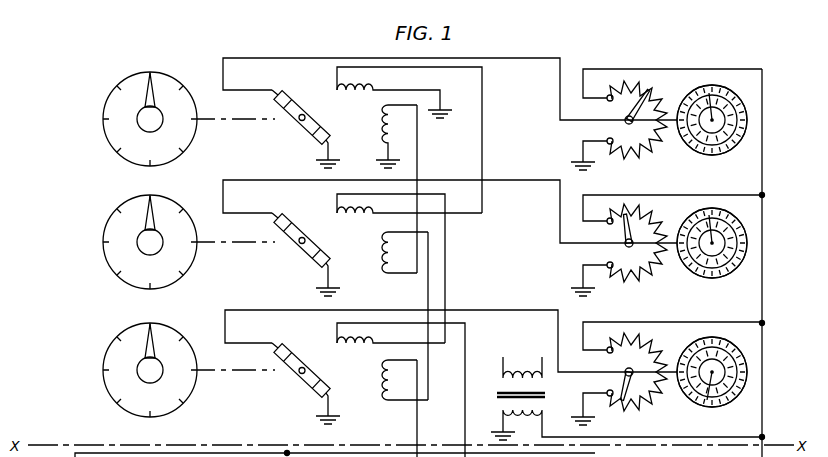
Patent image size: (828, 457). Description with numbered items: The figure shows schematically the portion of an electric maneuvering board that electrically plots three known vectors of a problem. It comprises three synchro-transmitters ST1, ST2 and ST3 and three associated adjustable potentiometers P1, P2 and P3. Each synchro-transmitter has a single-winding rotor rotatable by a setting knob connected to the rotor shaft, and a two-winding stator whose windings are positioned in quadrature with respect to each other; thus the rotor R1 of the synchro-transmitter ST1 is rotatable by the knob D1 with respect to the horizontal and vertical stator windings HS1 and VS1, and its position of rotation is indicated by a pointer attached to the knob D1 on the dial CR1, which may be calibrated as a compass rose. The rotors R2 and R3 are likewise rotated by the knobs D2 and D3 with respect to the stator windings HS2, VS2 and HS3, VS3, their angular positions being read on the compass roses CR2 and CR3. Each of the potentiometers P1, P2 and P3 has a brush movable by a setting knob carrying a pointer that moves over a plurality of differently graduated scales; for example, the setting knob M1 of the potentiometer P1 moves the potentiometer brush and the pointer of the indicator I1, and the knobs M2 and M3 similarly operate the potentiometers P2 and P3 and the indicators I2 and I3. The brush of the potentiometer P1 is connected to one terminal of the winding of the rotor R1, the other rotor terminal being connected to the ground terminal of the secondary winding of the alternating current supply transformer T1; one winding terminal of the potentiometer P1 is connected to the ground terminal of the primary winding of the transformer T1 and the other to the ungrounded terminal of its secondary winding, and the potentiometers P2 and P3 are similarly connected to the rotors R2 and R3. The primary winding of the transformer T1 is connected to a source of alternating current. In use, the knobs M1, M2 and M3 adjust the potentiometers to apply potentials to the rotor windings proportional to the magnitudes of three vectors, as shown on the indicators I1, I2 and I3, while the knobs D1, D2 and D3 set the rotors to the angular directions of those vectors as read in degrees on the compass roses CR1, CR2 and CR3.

The dial CR1 is at (123, 80).
The compass rose CR2 is at (125, 202).
The compass rose CR3 is at (133, 330).
The knob D1 is at (138, 123).
The knob D2 is at (137, 249).
The knob D3 is at (137, 375).
The synchro-transmitter ST1 is at (450, 79).
The synchro-transmitter ST2 is at (450, 203).
The synchro-transmitter ST3 is at (451, 332).
The rotor R1 is at (307, 121).
The rotor R2 is at (316, 249).
The rotor R3 is at (313, 378).
The horizontal stator winding HS1 is at (337, 89).
The horizontal stator winding HS2 is at (337, 213).
The horizontal stator winding HS3 is at (337, 343).
The vertical stator winding VS1 is at (381, 134).
The vertical stator winding VS2 is at (381, 258).
The vertical stator winding VS3 is at (381, 385).
The adjustable potentiometer P1 is at (645, 88).
The adjustable potentiometer P2 is at (647, 200).
The adjustable potentiometer P3 is at (634, 333).
The setting knob M1 is at (720, 112).
The setting knob M2 is at (718, 238).
The setting knob M3 is at (714, 369).
The indicator I1 is at (727, 156).
The indicator I2 is at (728, 277).
The indicator I3 is at (729, 402).
The alternating current supply transformer T1 is at (547, 390).